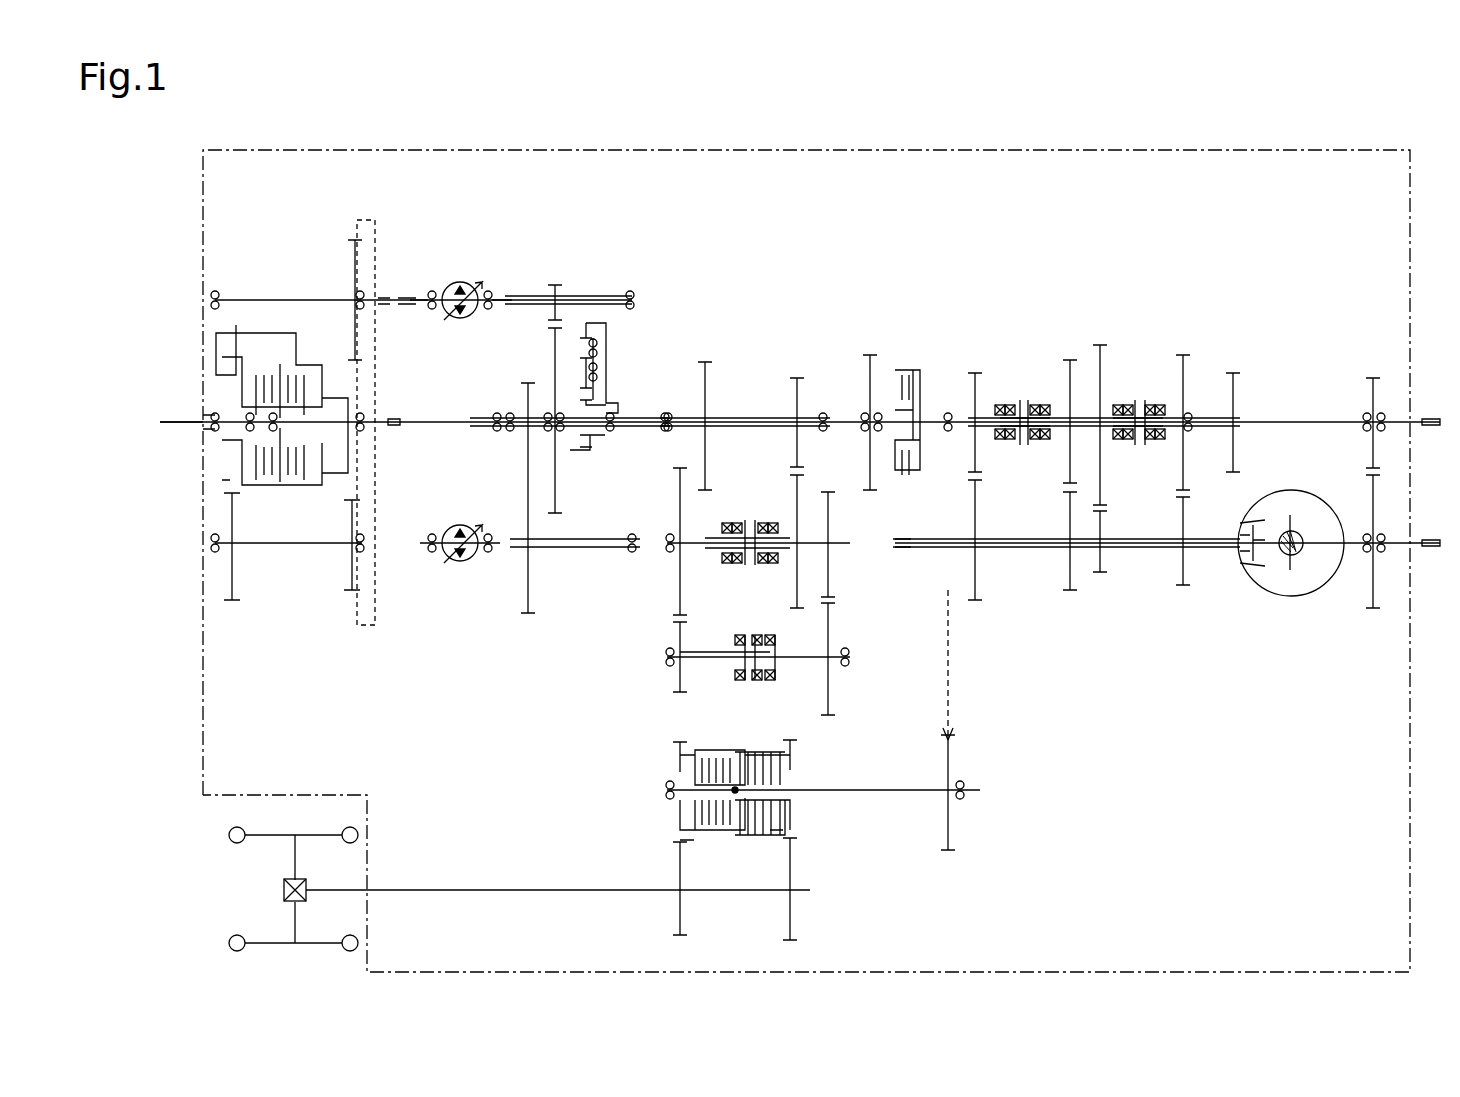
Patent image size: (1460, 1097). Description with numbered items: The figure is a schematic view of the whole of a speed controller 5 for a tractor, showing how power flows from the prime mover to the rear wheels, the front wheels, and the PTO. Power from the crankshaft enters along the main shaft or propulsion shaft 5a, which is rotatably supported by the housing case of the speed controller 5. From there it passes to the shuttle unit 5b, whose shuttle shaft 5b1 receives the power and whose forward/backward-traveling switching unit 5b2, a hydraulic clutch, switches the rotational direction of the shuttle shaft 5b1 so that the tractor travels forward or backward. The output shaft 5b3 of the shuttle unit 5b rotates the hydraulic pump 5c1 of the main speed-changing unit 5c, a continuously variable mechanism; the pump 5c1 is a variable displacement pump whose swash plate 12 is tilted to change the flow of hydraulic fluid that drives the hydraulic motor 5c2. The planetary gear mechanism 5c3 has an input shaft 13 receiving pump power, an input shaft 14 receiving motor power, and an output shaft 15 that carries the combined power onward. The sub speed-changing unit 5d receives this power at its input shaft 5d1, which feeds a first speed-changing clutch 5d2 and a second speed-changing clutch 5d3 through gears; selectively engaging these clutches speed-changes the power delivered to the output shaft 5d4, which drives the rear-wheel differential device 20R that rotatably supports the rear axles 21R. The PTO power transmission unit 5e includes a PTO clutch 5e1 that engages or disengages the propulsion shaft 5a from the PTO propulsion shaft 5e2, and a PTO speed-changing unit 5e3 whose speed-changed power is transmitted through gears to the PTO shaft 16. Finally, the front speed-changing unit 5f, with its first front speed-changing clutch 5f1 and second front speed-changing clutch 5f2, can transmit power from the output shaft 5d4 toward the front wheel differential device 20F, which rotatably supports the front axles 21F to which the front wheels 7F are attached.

The speed controller 5 is at (1412, 215).
The main shaft (propulsion shaft) 5a is at (200, 422).
The shuttle unit 5b is at (290, 258).
The shuttle shaft 5b1 is at (222, 440).
The forward/backward-traveling switching unit 5b2 is at (310, 355).
The output shaft of the shuttle unit 5b3 is at (378, 300).
The main speed-changing unit 5c is at (588, 274).
The hydraulic pump 5c1 is at (470, 283).
The hydraulic motor 5c2 is at (470, 560).
The planetary gear mechanism 5c3 is at (617, 342).
The sub speed-changing unit 5d is at (749, 386).
The input shaft 5d1 is at (752, 435).
The first speed-changing clutch 5d2 is at (813, 565).
The second speed-changing clutch 5d3 is at (796, 674).
The output shaft 5d4 is at (853, 540).
The PTO power transmission unit 5e is at (910, 351).
The PTO clutch 5e1 is at (922, 385).
The PTO propulsion shaft 5e2 is at (957, 412).
The PTO speed-changing unit 5e3 is at (1145, 382).
The front speed-changing unit 5f is at (805, 833).
The first front speed-changing clutch 5f1 is at (733, 737).
The second front speed-changing clutch 5f2 is at (730, 855).
The swash plate 12 is at (470, 316).
The input shaft 13 is at (632, 296).
The input shaft 14 is at (575, 555).
The output shaft 15 is at (660, 440).
The PTO shaft 16 is at (1397, 548).
The rear-wheel differential device 20R is at (1291, 597).
The rear axles 21R is at (1293, 530).
The front wheels 7F is at (237, 827).
The front wheel differential device 20F is at (280, 890).
The front axles 21F is at (295, 925).